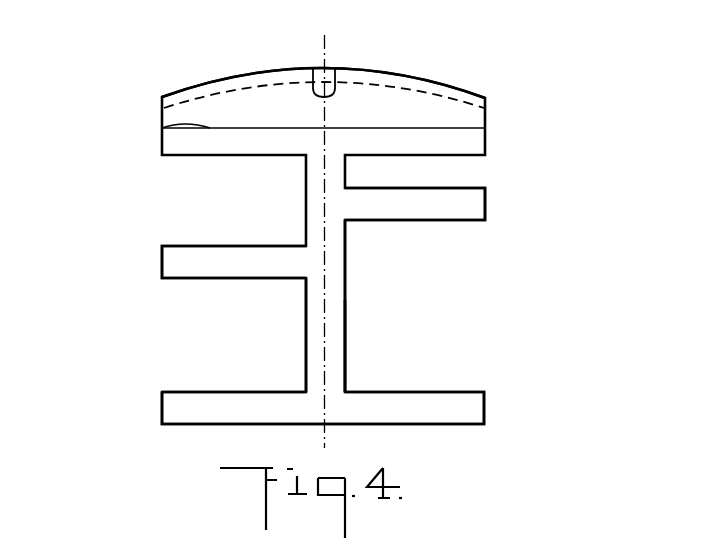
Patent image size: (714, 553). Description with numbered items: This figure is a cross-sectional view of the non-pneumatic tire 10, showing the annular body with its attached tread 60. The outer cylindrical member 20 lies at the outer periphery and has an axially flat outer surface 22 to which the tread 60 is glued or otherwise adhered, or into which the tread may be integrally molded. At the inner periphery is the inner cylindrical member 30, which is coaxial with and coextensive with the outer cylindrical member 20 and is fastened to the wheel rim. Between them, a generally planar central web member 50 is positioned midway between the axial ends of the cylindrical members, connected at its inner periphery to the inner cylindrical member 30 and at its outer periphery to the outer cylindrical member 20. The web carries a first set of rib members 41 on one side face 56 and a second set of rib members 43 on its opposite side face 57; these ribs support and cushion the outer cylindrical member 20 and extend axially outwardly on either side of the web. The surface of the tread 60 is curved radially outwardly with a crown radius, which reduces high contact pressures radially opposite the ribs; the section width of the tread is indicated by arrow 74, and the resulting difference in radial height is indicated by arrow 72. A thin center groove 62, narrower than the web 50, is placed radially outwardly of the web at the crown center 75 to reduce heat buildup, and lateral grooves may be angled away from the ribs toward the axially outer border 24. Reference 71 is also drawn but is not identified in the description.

The structural member assembly 10 is at (112, 102).
The base member 20 is at (161, 154).
The hidden contour line 22 is at (162, 128).
The upper flange 24 is at (486, 150).
The lower flange 30 is at (485, 407).
The right arm 41 is at (434, 221).
The left arm 43 is at (197, 280).
The web 50 is at (346, 328).
The web side surface 56 is at (346, 362).
The web side surface 57 is at (305, 357).
The convex top surface 60 is at (230, 78).
The notch 62 is at (318, 67).
The notch edge 71 is at (338, 65).
The crown height 72 is at (362, 68).
The overall width 74 is at (162, 97).
The notch center 75 is at (333, 62).